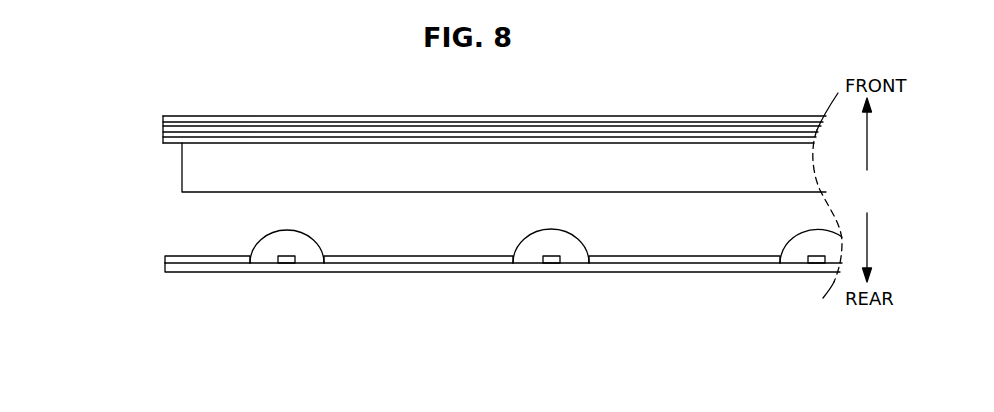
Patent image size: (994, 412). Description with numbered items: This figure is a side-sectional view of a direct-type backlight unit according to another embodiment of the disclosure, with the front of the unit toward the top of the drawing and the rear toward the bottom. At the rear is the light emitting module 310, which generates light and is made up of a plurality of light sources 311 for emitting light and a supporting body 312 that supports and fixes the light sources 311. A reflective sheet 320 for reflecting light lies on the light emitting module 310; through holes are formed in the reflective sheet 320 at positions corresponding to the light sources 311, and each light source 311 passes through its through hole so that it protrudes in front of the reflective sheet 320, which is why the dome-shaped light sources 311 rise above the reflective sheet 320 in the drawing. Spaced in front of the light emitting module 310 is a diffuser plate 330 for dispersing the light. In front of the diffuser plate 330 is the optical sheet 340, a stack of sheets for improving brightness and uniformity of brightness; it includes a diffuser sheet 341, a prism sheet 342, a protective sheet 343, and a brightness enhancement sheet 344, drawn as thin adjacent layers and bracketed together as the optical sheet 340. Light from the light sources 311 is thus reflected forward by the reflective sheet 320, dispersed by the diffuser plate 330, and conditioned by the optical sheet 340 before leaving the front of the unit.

The light emitting module 310 is at (503, 301).
The light source 311 is at (265, 258).
The supporting body 312 is at (209, 268).
The reflective sheet 320 is at (165, 258).
The diffuser plate 330 is at (183, 180).
The optical sheet 340 is at (428, 117).
The diffuser sheet 341 is at (454, 142).
The prism sheet 342 is at (163, 131).
The protective sheet 343 is at (163, 125).
The brightness enhancement sheet 344 is at (163, 119).